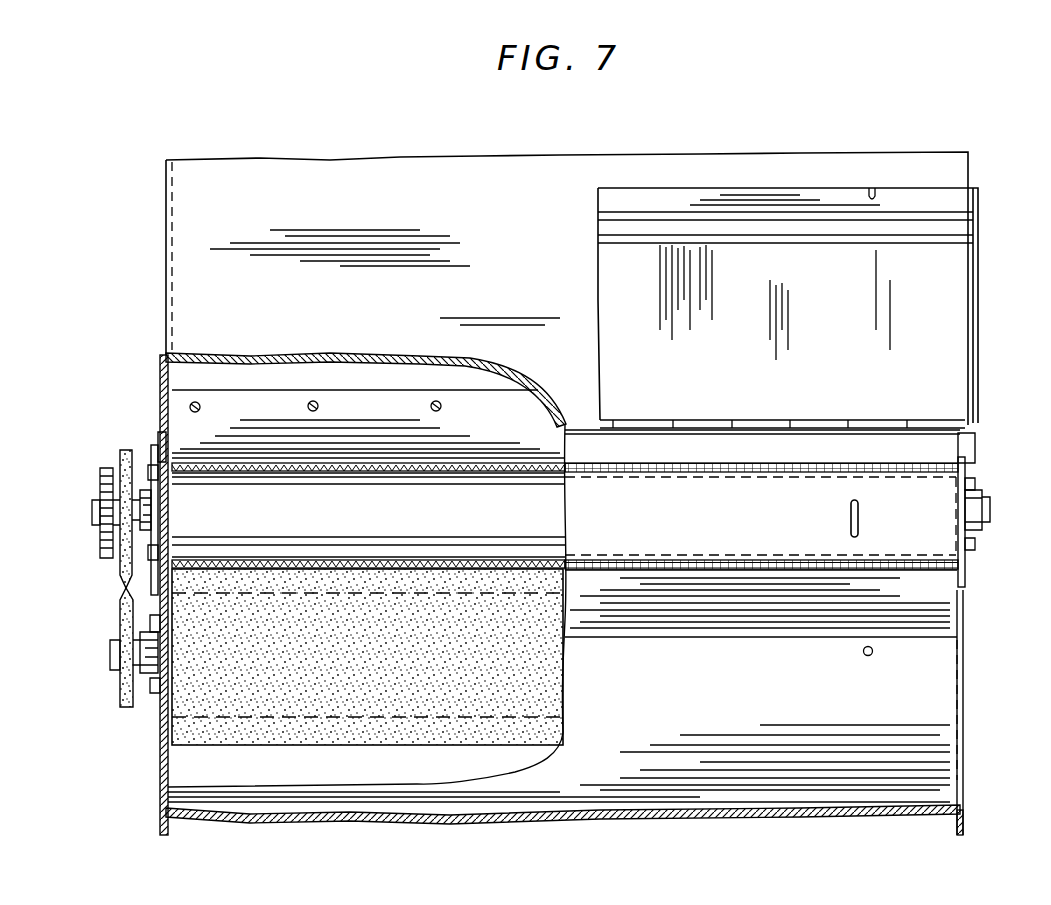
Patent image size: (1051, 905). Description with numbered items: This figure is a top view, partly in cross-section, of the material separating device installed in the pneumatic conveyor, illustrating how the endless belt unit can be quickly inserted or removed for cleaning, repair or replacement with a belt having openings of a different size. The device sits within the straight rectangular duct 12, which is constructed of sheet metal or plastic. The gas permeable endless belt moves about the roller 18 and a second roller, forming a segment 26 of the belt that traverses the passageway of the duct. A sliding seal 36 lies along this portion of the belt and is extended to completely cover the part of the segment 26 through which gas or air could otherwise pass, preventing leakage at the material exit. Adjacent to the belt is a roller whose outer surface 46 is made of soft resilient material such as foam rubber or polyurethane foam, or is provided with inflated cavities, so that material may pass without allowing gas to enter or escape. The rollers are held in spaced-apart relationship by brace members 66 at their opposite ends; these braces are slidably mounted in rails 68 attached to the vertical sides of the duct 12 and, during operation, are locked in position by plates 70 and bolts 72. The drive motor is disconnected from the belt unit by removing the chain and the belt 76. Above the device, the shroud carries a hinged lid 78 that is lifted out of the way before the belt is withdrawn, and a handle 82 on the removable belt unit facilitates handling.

The rectangular duct 12 is at (300, 309).
The roller 18 is at (393, 519).
The segment of the endless belt 26 is at (415, 570).
The seal 36 is at (332, 396).
The outer surface of the roller 46 is at (348, 730).
The brace members 66 is at (172, 489).
The rails 68 is at (163, 440).
The plates 70 is at (154, 468).
The bolts 72 is at (142, 490).
The belt 76 is at (125, 585).
The hinged lid 78 is at (598, 272).
The handle 82 is at (851, 519).